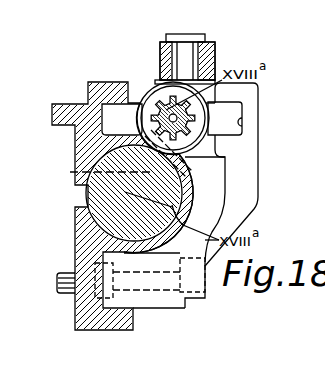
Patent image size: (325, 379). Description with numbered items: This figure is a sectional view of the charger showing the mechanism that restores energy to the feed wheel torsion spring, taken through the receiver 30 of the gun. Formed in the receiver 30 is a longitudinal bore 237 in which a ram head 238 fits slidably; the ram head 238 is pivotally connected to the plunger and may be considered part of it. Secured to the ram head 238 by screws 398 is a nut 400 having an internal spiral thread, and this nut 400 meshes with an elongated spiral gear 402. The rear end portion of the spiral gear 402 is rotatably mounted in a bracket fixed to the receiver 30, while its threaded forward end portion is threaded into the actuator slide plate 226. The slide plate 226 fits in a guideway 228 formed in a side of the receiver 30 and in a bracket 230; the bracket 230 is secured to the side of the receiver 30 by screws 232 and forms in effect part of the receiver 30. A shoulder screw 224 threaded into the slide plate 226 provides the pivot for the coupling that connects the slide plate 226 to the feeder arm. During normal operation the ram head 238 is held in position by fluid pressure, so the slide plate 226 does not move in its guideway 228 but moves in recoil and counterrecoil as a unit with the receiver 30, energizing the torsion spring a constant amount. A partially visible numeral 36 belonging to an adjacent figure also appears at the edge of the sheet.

The receiver 30 is at (75, 143).
The shoulder screw 224 is at (160, 43).
The slide plate 226 is at (236, 110).
The guideway 228 is at (241, 123).
The bracket 230 is at (258, 180).
The screws 232 is at (195, 300).
The longitudinal bore 237 is at (179, 203).
The ram head 238 is at (87, 198).
The screws 398 is at (92, 173).
The nut 400 is at (158, 97).
The spiral gear 402 is at (162, 122).
The support 36 is at (300, 2).